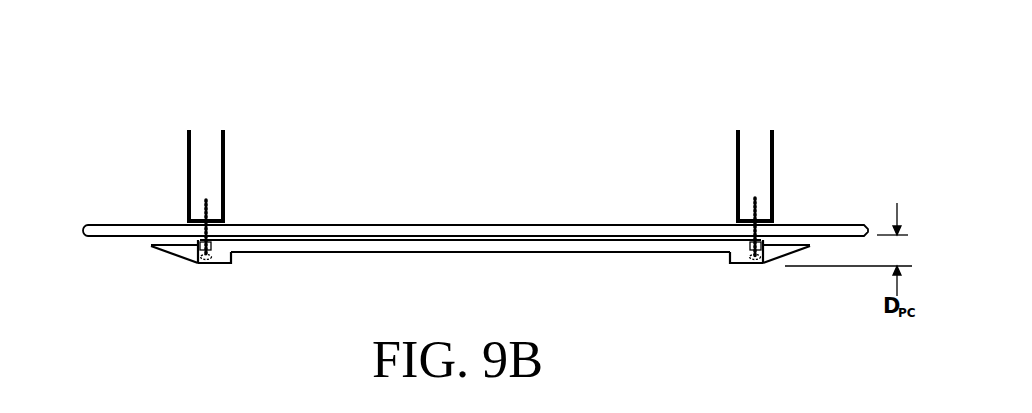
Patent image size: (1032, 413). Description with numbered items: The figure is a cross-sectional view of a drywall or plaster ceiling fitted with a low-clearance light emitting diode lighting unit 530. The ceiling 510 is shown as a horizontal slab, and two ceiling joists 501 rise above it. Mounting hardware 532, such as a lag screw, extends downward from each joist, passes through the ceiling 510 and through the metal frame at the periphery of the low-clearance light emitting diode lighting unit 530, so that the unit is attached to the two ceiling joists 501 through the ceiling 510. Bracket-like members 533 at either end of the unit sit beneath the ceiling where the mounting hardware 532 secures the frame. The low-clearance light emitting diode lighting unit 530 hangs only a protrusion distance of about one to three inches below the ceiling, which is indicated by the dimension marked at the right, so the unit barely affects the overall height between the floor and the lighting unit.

The ceiling joist 501 is at (750, 178).
The ceiling 510 is at (110, 237).
The low-clearance light emitting diode lighting unit 530 is at (482, 253).
The mounting hardware 532 is at (207, 219).
The clip brackets 533 is at (763, 258).